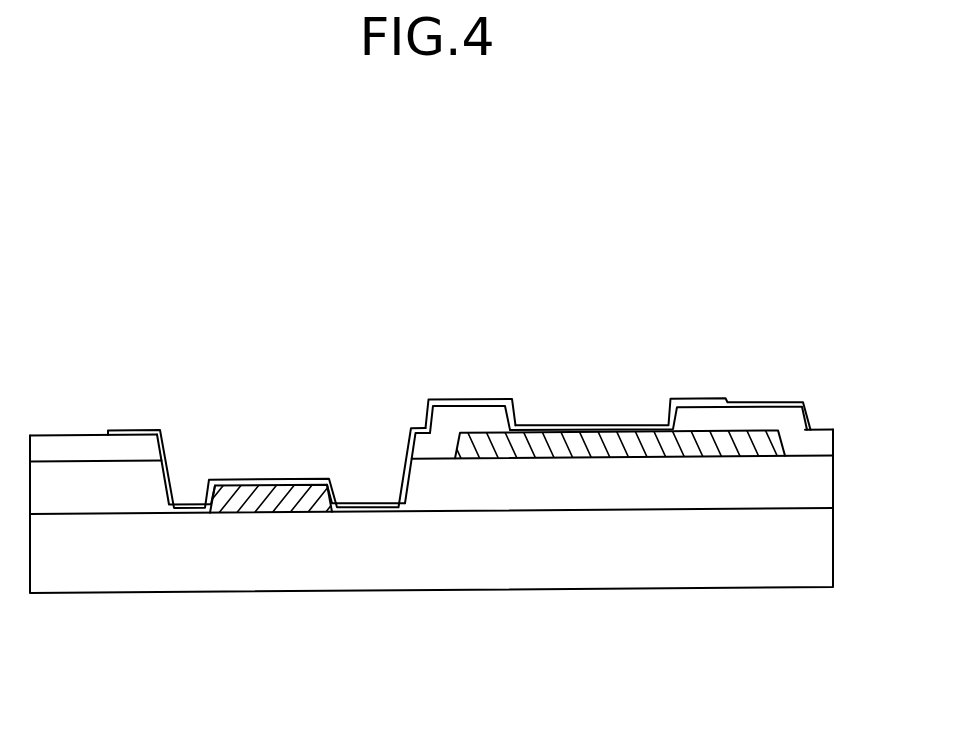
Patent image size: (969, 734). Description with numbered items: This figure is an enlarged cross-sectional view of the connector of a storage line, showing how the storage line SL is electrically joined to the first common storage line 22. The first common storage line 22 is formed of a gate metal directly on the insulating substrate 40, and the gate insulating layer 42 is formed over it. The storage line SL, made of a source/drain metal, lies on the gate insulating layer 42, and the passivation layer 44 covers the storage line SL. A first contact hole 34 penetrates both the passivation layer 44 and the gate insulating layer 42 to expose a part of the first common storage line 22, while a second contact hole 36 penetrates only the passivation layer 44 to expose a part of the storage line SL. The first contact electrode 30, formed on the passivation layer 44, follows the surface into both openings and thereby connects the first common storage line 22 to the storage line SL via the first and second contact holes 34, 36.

The first common storage line 22 is at (270, 517).
The first contact electrode 30 is at (471, 402).
The first contact hole 34 is at (268, 462).
The second contact hole 36 is at (594, 419).
The insulating substrate 40 is at (833, 556).
The gate insulating layer 42 is at (833, 490).
The passivation layer 44 is at (833, 449).
The storage line SL is at (617, 462).